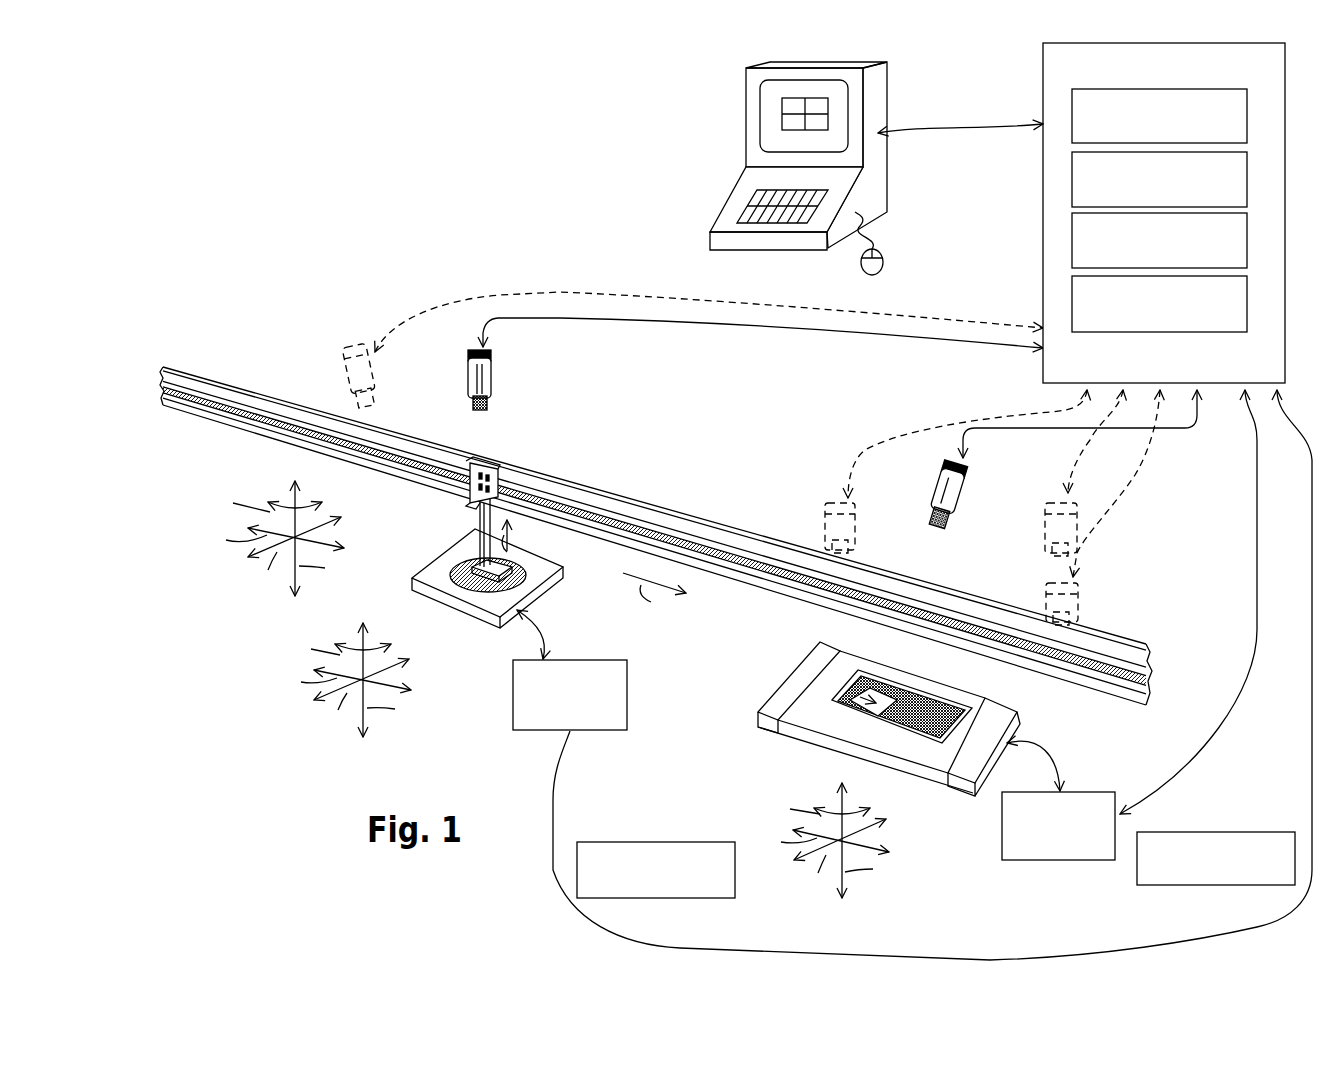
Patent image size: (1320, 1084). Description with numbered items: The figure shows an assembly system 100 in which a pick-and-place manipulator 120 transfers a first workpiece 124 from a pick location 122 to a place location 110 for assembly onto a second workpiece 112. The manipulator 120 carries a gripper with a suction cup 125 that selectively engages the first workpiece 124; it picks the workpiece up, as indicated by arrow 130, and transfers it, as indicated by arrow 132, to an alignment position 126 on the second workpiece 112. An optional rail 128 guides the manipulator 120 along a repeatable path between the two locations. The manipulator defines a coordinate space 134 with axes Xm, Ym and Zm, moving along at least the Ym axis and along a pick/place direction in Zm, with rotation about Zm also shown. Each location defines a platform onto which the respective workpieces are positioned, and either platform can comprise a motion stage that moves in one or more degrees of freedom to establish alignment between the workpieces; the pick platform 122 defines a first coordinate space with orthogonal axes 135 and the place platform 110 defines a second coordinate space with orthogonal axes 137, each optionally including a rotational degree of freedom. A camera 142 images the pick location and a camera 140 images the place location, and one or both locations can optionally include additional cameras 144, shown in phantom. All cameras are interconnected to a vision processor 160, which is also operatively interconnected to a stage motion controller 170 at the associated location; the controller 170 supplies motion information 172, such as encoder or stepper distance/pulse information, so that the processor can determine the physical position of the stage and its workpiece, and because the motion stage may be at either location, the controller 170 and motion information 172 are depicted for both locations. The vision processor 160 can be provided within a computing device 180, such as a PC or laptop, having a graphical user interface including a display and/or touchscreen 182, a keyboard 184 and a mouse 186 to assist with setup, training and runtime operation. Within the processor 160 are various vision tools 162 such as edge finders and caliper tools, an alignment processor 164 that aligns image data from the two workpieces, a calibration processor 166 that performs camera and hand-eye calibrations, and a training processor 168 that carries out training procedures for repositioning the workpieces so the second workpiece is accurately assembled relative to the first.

The assembly system 100 is at (598, 238).
The place location 110 is at (810, 724).
The second workpiece 112 is at (985, 698).
The pick-and-place manipulator mechanism 120 is at (470, 450).
The pick location 122 is at (462, 616).
The first workpiece 124 is at (470, 560).
The suction cup 125 is at (508, 578).
The alignment position 126 is at (893, 685).
The rail 128 is at (665, 511).
The pick-up arrow 130 is at (512, 537).
The transfer arrow 132 is at (654, 604).
The manipulator coordinate space 134 is at (240, 553).
The first coordinate space axes 135 is at (310, 703).
The second coordinate space axes 137 is at (795, 866).
The camera 140 is at (965, 497).
The camera 142 is at (487, 376).
The additional cameras 144 is at (355, 340).
The vision processor 160 is at (1042, 281).
The vision tools 162 is at (1072, 128).
The alignment processor 164 is at (1072, 182).
The calibration processor 166 is at (1072, 233).
The training processor 168 is at (1072, 295).
The stage motion controller 170 is at (575, 731).
The motion information 172 is at (643, 842).
The computing device 180 is at (753, 85).
The display and/or touchscreen 182 is at (775, 122).
The keyboard 184 is at (755, 205).
The mouse 186 is at (858, 263).